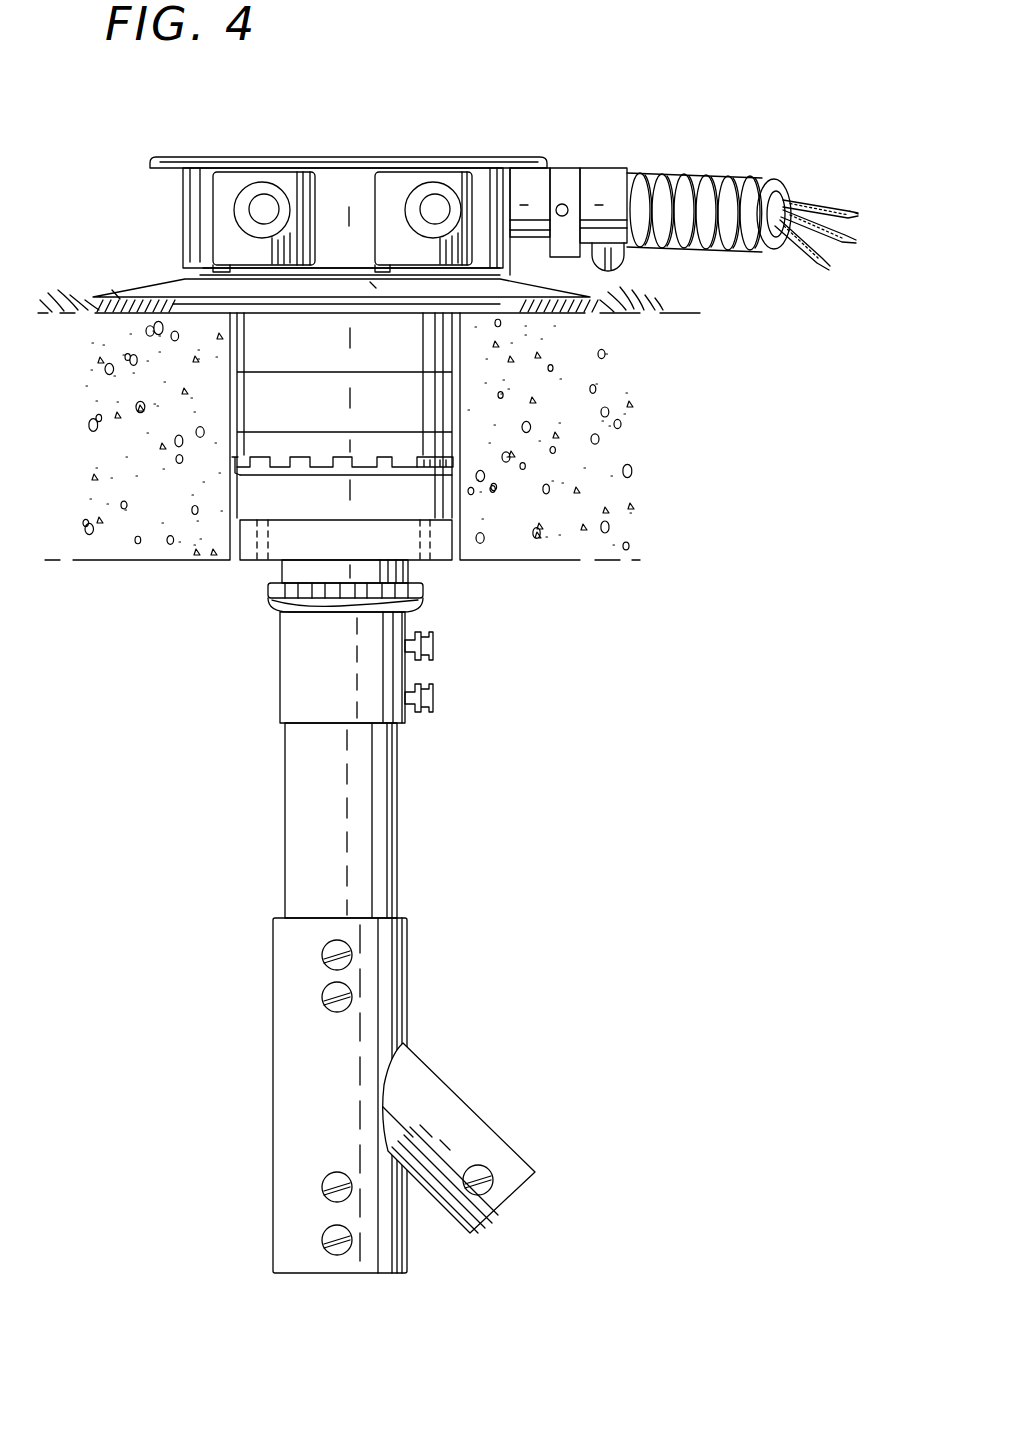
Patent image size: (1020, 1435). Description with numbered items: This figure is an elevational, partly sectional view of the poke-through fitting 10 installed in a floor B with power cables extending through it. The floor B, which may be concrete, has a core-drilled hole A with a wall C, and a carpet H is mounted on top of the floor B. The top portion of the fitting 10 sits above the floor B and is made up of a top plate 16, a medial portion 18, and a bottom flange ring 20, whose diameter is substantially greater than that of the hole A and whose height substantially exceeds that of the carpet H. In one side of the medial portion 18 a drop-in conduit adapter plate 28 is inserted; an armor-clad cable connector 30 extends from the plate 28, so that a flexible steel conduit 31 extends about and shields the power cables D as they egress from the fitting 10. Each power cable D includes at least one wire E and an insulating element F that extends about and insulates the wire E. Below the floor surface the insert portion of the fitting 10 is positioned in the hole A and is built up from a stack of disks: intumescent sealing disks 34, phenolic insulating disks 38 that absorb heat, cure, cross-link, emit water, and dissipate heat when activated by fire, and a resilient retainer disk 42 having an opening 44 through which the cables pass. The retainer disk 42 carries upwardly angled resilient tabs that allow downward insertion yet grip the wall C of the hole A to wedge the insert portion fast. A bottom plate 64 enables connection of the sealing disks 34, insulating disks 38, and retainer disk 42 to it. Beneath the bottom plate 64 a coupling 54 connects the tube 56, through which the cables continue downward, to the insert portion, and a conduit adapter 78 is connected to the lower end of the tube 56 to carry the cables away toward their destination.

The fitting 10 is at (337, 167).
The top plate 16 is at (448, 157).
The medial portion 18 is at (202, 188).
The bottom flange ring 20 is at (158, 287).
The drop-in conduit adapter plate 28 is at (508, 165).
The armor-clad cable connector 30 is at (565, 167).
The flexible steel conduit 31 is at (685, 167).
The sealing disk 34 is at (252, 448).
The insulating disk 38 is at (443, 396).
The retainer disk 42 is at (453, 462).
The opening 44 is at (443, 482).
The coupling 54 is at (393, 673).
The pipe 56 is at (380, 842).
The bottom plate 64 is at (287, 570).
The conduit adapter 78 is at (400, 965).
The hole A is at (450, 502).
The floor B is at (533, 517).
The wall C is at (253, 509).
The power cable D is at (817, 203).
The wire E is at (835, 257).
The insulating element F is at (793, 247).
The carpet H is at (655, 292).